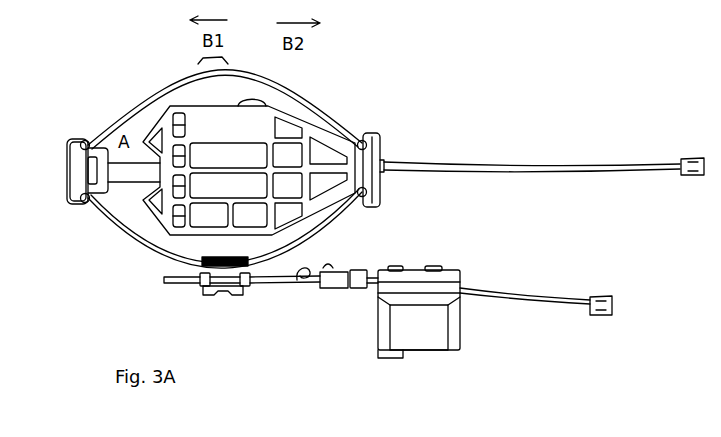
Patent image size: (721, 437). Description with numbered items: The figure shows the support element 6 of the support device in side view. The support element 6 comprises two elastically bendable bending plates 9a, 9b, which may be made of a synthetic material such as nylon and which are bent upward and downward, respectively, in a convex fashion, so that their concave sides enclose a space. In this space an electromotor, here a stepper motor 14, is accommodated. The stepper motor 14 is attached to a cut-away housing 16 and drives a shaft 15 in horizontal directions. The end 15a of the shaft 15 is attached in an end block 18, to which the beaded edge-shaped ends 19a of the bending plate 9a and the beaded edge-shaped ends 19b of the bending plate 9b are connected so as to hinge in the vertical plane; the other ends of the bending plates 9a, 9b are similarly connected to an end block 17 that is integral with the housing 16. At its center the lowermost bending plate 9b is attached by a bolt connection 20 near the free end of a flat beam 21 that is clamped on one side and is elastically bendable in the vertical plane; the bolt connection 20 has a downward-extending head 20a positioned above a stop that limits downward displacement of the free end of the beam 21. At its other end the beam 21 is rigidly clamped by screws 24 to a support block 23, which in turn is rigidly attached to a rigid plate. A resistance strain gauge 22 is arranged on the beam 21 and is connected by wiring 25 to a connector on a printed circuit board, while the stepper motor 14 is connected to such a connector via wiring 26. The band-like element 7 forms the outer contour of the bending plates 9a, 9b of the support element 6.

The support element 6 is at (387, 67).
The ring band 7 is at (200, 62).
The bending plate 9a is at (137, 98).
The bending plate 9b is at (128, 247).
The stepper motor 14 is at (240, 160).
The shaft 15 is at (137, 178).
The end of the shaft 15a is at (91, 172).
The cut-away housing 16 is at (305, 137).
The end block 17 is at (379, 173).
The end block 18 is at (70, 155).
The beaded edge-shaped ends 19a is at (85, 140).
The beaded edge-shaped ends 19b is at (84, 203).
The bolt connection 20 is at (213, 292).
The head 20a is at (235, 297).
The beam 21 is at (271, 284).
The resistance strain gauge 22 is at (300, 277).
The support block 23 is at (434, 328).
The screws 24 is at (404, 265).
The wiring 25 is at (545, 283).
The wiring 26 is at (500, 166).